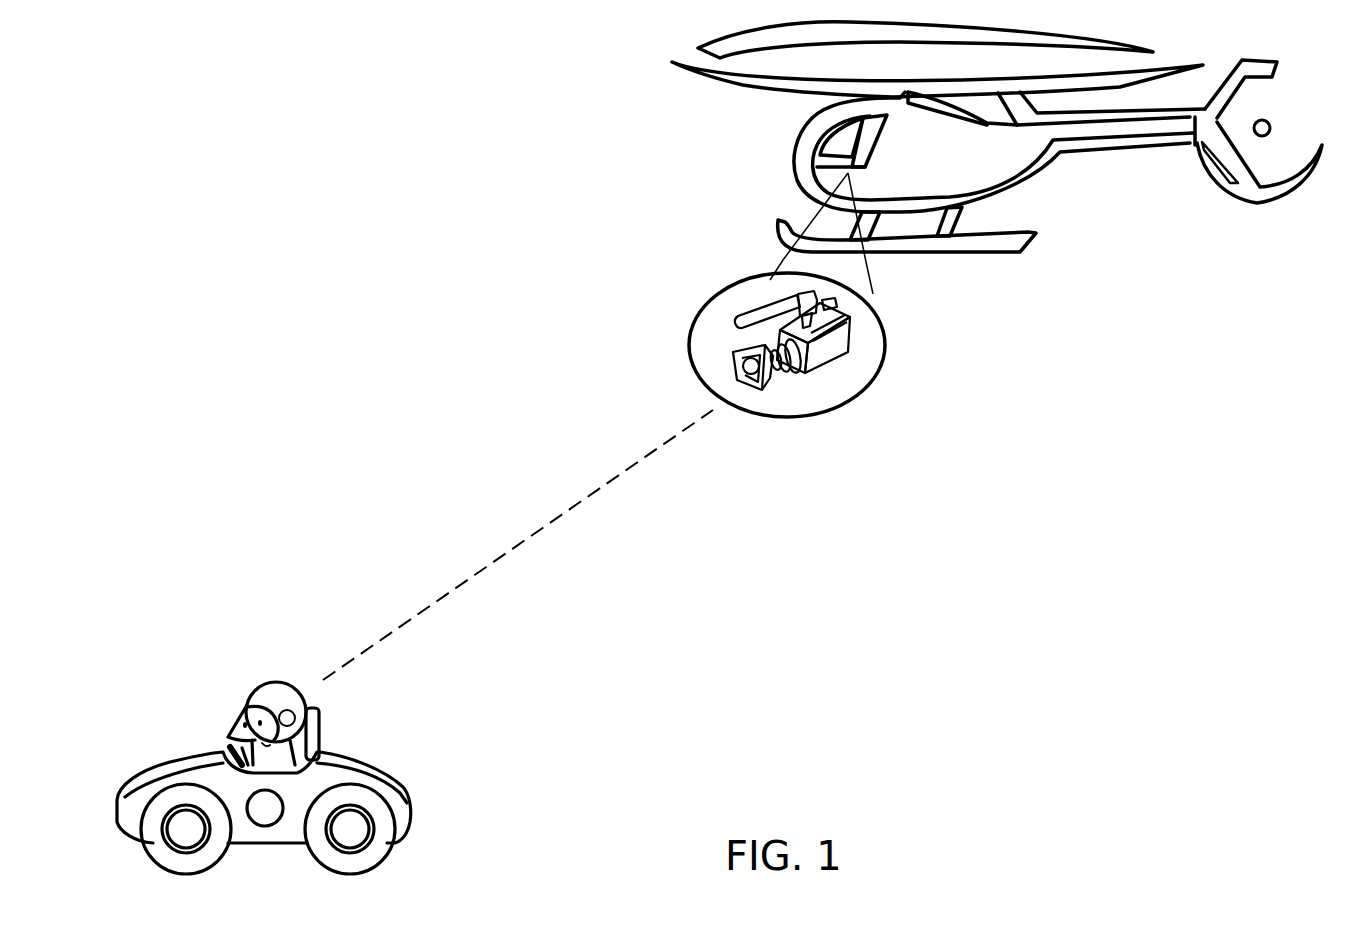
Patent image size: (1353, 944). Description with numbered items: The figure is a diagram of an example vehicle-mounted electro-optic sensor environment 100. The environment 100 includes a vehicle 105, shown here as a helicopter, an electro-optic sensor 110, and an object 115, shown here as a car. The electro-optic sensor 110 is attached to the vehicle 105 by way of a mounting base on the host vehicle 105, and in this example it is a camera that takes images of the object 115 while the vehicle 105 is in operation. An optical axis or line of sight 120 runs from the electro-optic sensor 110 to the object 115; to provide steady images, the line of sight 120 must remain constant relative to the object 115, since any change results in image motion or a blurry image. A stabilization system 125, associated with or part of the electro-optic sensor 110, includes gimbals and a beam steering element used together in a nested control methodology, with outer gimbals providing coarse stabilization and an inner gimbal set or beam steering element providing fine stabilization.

The vehicle-mounted electro-optic sensor environment 100 is at (299, 199).
The vehicle 105 is at (1040, 177).
The electro-optic sensor 110 is at (845, 357).
The object 115 is at (415, 810).
The line of sight 120 is at (517, 543).
The stabilization system 125 is at (688, 357).